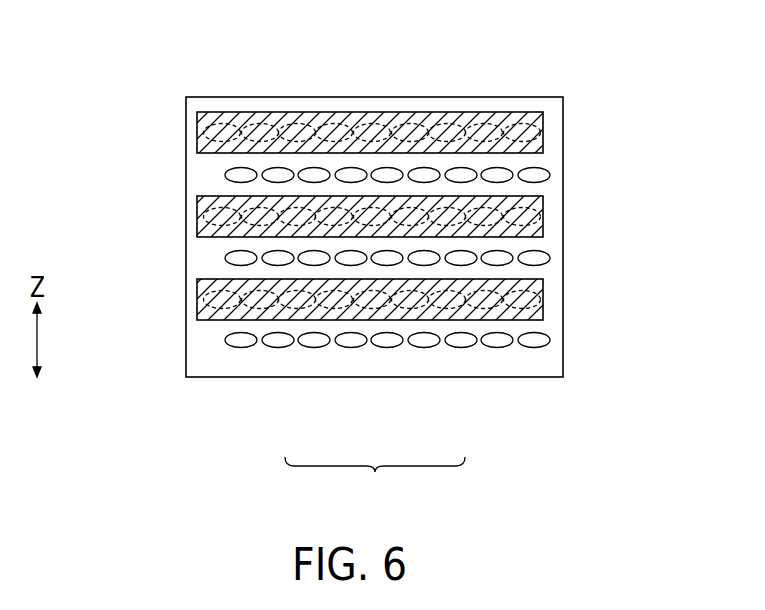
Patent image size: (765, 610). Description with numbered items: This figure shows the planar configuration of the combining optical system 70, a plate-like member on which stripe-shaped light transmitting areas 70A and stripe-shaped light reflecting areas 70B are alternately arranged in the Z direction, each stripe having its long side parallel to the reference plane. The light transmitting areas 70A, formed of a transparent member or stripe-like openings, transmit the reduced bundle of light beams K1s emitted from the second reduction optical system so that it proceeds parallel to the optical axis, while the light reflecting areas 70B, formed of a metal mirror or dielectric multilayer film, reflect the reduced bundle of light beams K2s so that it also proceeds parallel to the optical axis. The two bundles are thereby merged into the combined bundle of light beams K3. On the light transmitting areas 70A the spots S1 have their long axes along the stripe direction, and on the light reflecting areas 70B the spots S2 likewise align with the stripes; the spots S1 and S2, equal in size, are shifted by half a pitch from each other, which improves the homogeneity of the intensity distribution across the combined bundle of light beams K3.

The combining optical system 70 is at (596, 106).
The light transmitting area 70A is at (216, 171).
The light reflecting area 70B is at (197, 137).
The spot S1 is at (234, 181).
The spot S2 is at (212, 117).
The reduced bundle of light beams K1s is at (238, 189).
The reduced bundle of light beams K2s is at (497, 147).
The combined bundle of light beams K3 is at (375, 482).